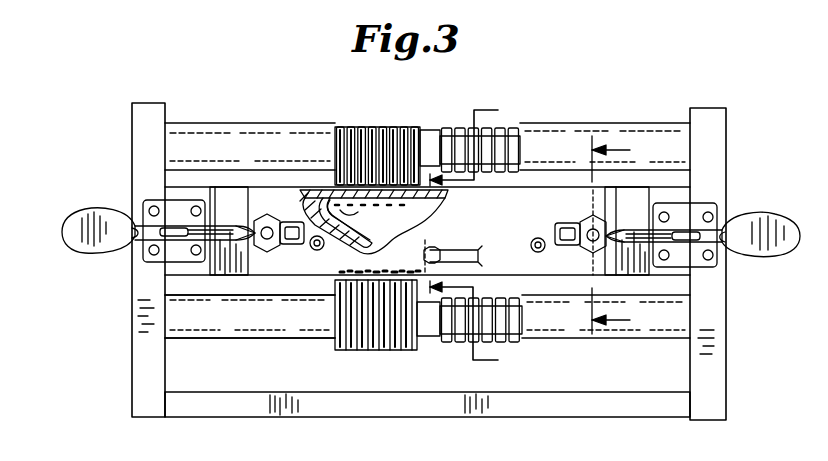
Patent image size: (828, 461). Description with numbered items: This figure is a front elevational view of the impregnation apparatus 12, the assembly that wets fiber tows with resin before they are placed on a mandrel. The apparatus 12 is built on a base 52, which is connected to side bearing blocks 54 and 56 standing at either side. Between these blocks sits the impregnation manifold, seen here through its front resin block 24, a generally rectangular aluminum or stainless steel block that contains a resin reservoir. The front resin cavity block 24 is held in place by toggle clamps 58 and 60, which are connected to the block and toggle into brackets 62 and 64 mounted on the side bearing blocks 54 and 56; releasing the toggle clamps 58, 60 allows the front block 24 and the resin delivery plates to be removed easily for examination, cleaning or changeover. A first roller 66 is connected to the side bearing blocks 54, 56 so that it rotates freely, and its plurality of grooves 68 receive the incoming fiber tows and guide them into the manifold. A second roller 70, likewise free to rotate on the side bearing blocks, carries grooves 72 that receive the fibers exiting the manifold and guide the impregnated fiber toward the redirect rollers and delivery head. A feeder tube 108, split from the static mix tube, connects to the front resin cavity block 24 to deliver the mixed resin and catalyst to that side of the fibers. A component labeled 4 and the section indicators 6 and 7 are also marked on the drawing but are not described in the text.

The impregnation apparatus 12 is at (598, 100).
The strain relief plate 4 is at (325, 168).
The section line 6 is at (470, 235).
The section line 7 is at (618, 235).
The front resin block 24 is at (531, 226).
The base 52 is at (640, 412).
The side bearing block 54 is at (146, 152).
The side bearing block 56 is at (712, 152).
The toggle clamp 58 is at (75, 222).
The toggle clamp 60 is at (770, 255).
The bracket 62 is at (150, 200).
The bracket 64 is at (702, 208).
The first roller 66 is at (553, 148).
The grooves 68 is at (452, 135).
The second roller 70 is at (268, 332).
The grooves 72 is at (515, 340).
The feeder tube 108 is at (440, 258).